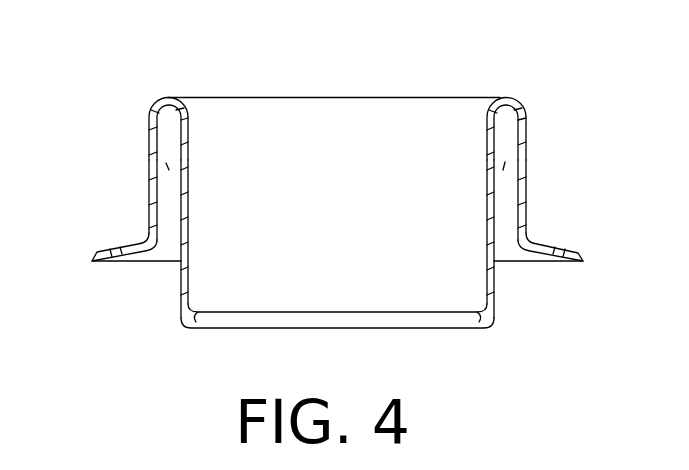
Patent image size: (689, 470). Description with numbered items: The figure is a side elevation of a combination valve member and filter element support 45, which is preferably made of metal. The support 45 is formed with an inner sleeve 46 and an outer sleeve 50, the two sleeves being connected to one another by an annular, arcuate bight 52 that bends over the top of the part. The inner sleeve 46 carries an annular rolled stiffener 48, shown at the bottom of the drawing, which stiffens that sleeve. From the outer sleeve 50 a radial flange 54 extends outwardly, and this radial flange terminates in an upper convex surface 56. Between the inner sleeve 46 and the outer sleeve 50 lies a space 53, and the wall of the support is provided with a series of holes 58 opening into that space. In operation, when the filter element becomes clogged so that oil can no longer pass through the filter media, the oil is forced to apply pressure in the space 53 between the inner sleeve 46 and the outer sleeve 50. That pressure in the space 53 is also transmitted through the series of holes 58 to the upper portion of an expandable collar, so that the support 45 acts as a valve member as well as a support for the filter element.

The combination valve member and filter element support 45 is at (150, 79).
The inner sleeve 46 is at (490, 285).
The annular rolled stiffener 48 is at (398, 330).
The outer sleeve 50 is at (529, 152).
The annular, arcuate bight 52 is at (506, 98).
The space 53 is at (168, 210).
The radial flange 54 is at (138, 256).
The upper convex surface 56 is at (120, 243).
The series of holes 58 is at (150, 152).